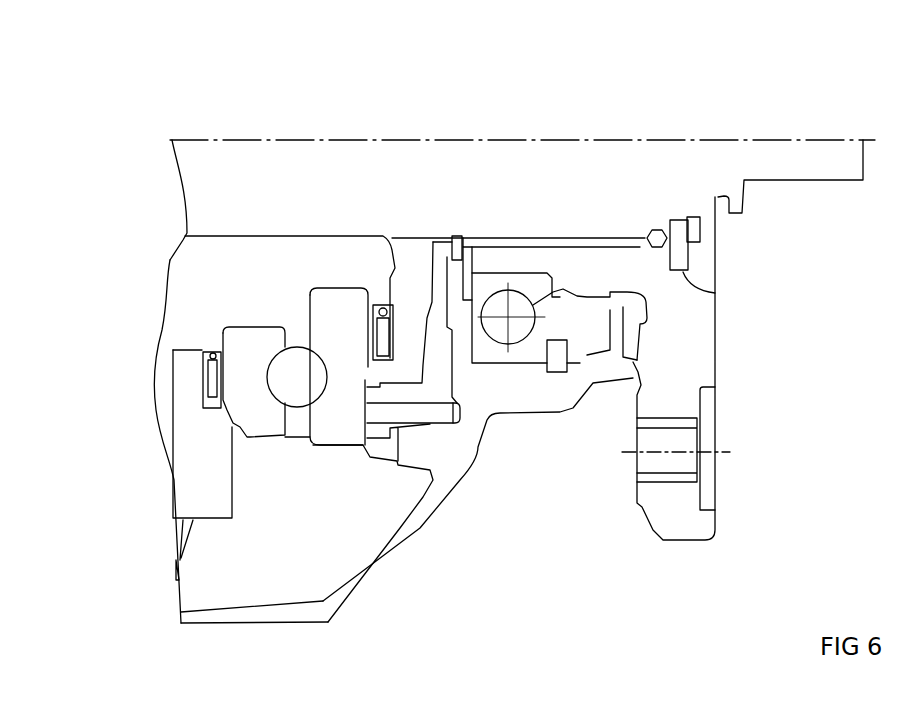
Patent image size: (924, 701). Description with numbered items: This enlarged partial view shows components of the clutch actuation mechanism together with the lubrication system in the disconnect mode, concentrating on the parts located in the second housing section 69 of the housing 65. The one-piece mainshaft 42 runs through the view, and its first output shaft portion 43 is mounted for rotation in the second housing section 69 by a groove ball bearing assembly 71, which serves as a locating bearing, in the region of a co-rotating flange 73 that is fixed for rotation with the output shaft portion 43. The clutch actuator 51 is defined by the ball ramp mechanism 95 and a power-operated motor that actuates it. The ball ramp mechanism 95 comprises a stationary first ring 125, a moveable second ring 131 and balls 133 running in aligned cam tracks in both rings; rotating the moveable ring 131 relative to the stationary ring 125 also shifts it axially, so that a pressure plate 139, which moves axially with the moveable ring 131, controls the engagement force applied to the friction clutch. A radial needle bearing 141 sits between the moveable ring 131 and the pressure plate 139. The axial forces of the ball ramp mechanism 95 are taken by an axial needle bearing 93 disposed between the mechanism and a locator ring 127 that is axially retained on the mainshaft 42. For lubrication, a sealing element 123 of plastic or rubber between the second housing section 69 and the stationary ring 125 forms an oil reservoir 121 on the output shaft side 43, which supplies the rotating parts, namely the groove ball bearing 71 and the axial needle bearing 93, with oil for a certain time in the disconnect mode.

The mainshaft 42 is at (220, 187).
The first output shaft portion 43 is at (788, 152).
The clutch actuator 51 is at (297, 257).
The housing 65 is at (405, 542).
The second housing section 69 is at (352, 590).
The groove ball bearing assembly 71 is at (553, 290).
The co-rotating flange 73 is at (692, 345).
The axial needle bearing 93 is at (390, 322).
The ball ramp mechanism 95 is at (297, 443).
The oil reservoir 121 is at (430, 347).
The sealing element 123 is at (413, 408).
The stationary first ring 125 is at (333, 320).
The locator ring 127 is at (420, 258).
The moveable second ring 131 is at (267, 430).
The balls 133 is at (308, 385).
The pressure plate 139 is at (197, 470).
The radial needle bearing 141 is at (203, 380).